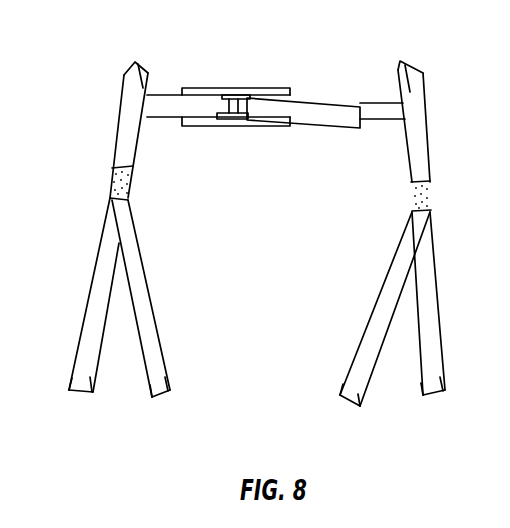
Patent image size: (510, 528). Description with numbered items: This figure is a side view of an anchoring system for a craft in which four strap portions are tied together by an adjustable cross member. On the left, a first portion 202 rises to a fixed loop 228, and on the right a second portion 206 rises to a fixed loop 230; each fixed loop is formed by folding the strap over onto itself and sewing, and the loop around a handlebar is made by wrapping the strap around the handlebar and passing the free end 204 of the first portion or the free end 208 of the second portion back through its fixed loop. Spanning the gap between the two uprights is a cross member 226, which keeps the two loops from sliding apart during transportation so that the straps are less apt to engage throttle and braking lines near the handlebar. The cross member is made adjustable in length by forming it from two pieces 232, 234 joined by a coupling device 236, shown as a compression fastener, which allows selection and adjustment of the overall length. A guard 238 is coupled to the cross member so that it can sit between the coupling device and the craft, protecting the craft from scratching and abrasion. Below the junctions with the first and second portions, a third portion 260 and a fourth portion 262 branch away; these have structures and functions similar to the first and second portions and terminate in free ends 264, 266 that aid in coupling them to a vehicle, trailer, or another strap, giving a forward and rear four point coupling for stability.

The first portion 202 is at (105, 240).
The free end 204 is at (78, 378).
The second portion 206 is at (430, 275).
The free end 208 is at (435, 388).
The cross member 226 is at (387, 103).
The fixed loop 228 is at (140, 72).
The fixed loop 230 is at (415, 72).
The piece 232 is at (156, 103).
The piece 234 is at (383, 117).
The coupling device 236 is at (240, 97).
The guard 238 is at (188, 88).
The third portion 260 is at (140, 273).
The fourth portion 262 is at (380, 293).
The free end 264 is at (163, 396).
The free end 266 is at (350, 398).